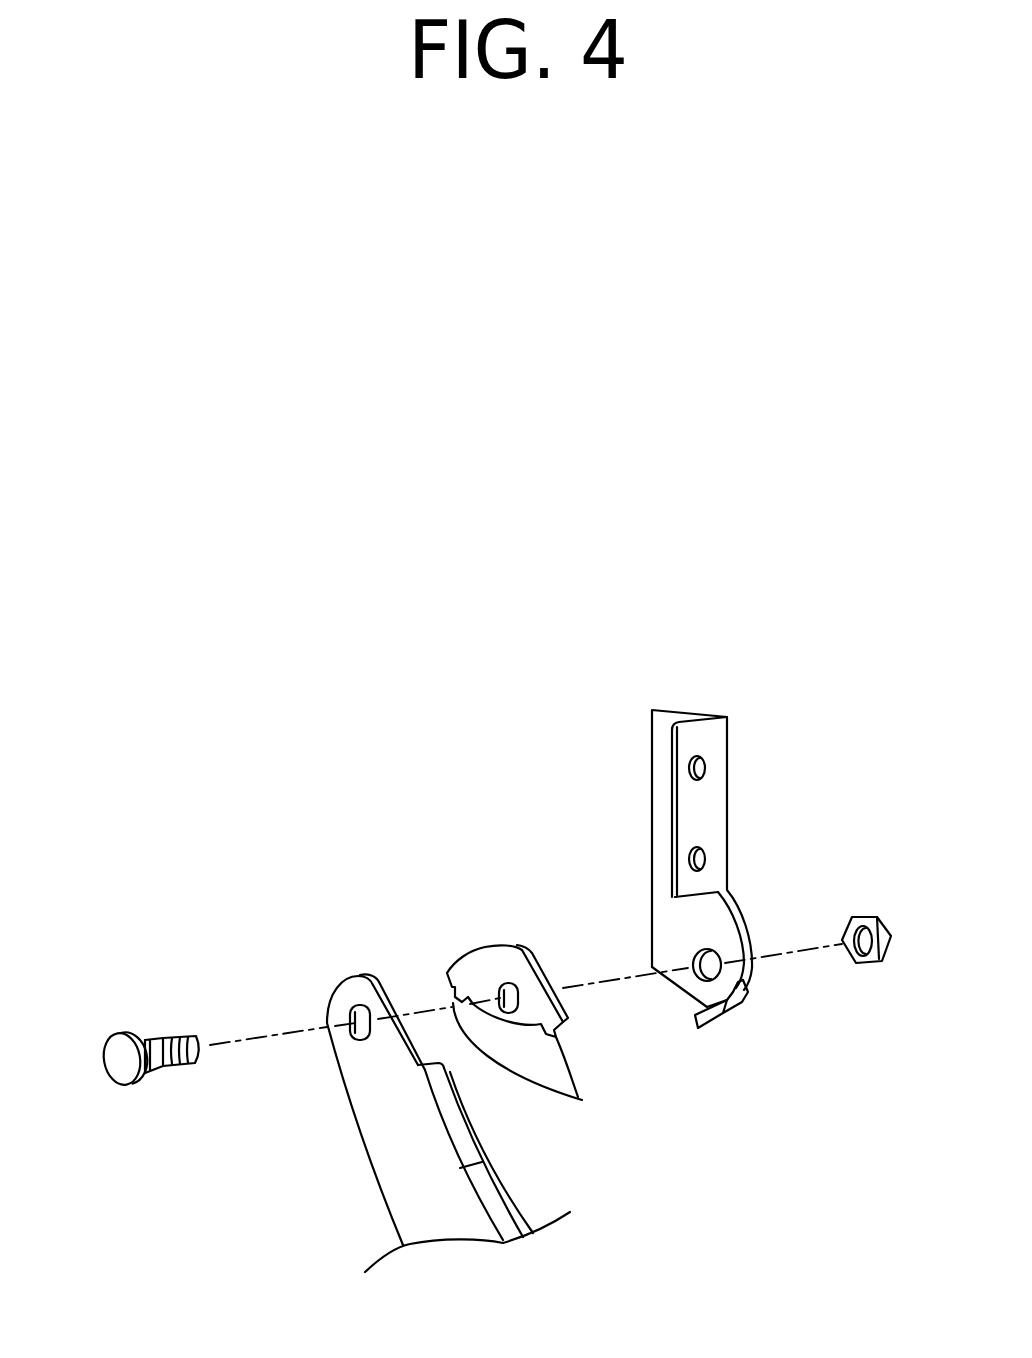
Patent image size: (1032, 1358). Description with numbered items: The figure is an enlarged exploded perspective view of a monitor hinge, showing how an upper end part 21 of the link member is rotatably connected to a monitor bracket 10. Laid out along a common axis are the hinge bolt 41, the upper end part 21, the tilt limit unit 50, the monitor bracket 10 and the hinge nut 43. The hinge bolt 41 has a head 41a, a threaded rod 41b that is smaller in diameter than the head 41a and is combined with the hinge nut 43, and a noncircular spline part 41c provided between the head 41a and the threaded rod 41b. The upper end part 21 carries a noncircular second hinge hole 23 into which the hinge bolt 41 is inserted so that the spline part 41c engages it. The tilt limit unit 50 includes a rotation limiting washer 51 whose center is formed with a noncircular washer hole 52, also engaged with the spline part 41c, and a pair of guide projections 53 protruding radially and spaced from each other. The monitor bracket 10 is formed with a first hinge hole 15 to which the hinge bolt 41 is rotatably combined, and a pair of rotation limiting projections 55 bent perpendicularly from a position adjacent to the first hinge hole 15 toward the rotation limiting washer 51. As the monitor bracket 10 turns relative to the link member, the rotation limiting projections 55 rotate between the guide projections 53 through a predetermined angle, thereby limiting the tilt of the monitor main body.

The monitor bracket 10 is at (699, 908).
The first hinge hole 15 is at (719, 967).
The upper end part 21 is at (423, 1076).
The second hinge hole 23 is at (353, 1006).
The hinge bolt 41 is at (148, 966).
The head 41a is at (107, 1036).
The threaded rod 41b is at (206, 984).
The spline part 41c is at (153, 1033).
The hinge nut 43 is at (873, 966).
The tilt limit unit 50 is at (590, 1019).
The rotation limiting washer 51 is at (478, 970).
The washer hole 52 is at (507, 985).
The guide projections 53 is at (528, 1073).
The rotation limiting projections 55 is at (731, 1048).